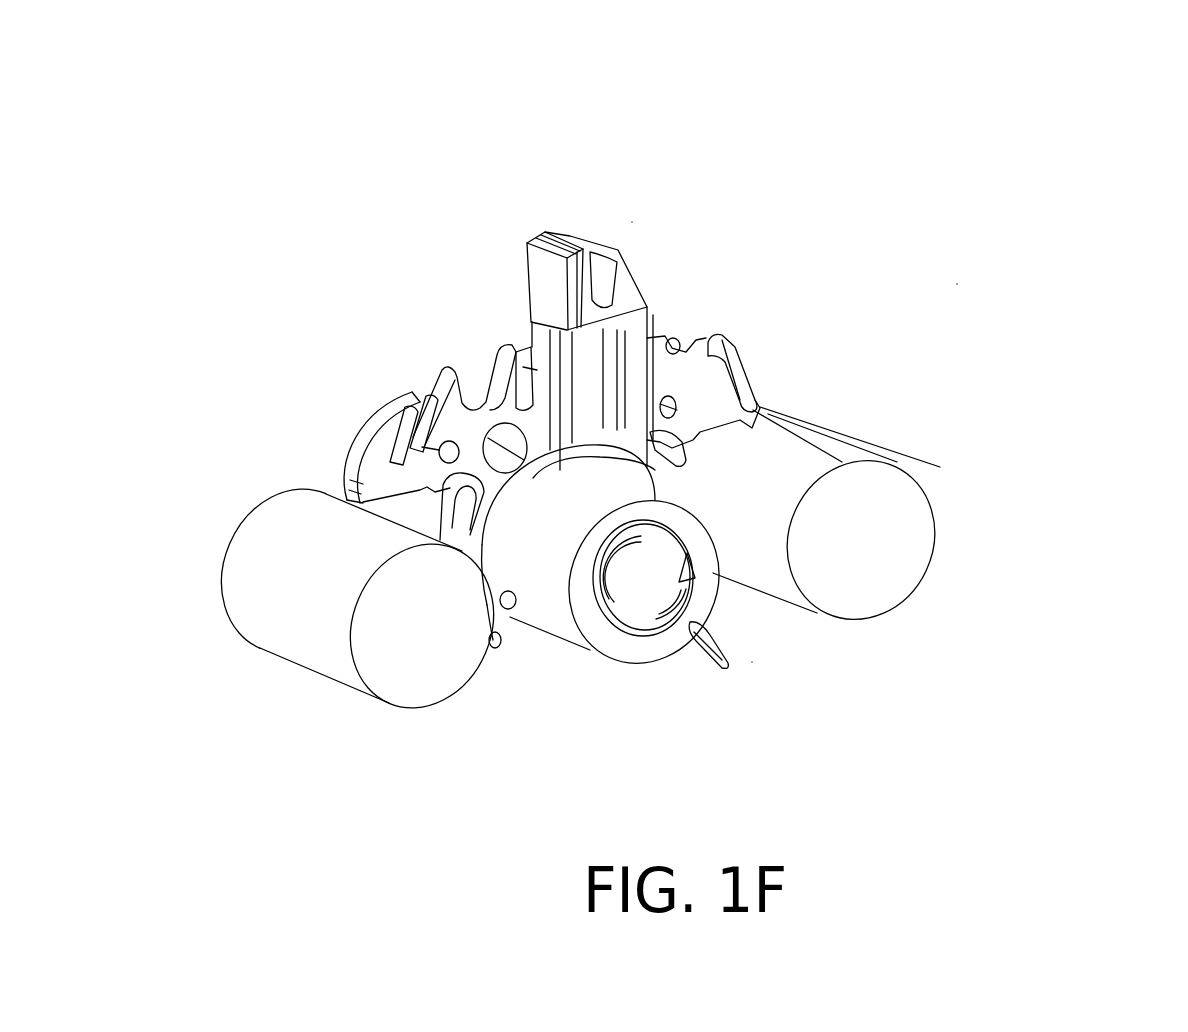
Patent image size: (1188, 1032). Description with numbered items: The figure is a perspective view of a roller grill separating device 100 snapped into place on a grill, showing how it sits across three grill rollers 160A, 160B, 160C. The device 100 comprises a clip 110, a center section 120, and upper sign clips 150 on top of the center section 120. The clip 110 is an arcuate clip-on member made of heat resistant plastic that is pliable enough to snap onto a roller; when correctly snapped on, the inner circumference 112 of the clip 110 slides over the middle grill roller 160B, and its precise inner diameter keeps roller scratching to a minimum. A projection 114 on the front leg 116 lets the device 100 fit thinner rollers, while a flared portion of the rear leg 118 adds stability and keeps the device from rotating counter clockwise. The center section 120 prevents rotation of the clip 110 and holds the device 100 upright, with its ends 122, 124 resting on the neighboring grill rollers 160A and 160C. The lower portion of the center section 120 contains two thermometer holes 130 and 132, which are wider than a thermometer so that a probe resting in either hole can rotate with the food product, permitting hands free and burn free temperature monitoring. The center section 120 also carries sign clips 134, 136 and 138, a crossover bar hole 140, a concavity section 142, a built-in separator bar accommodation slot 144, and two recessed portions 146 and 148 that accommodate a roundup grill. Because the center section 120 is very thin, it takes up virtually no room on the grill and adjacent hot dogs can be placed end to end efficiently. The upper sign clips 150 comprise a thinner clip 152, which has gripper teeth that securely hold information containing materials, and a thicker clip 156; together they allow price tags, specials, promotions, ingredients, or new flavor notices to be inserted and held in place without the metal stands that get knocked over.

The roller grill separating device 100 is at (983, 269).
The clip 110 is at (779, 682).
The inner circumference 112 is at (519, 556).
The projection 114 is at (512, 618).
The front leg 116 is at (497, 612).
The rear leg 118 is at (713, 663).
The center section 120 is at (801, 376).
The end 122 is at (373, 487).
The end 124 is at (850, 463).
The thermometer hole 130 is at (407, 400).
The thermometer hole 132 is at (678, 405).
The sign clip 134 is at (400, 432).
The sign clip 136 is at (510, 345).
The sign clip 138 is at (708, 342).
The crossover bar hole 140 is at (502, 485).
The concavity section 142 is at (477, 393).
The built-in separator bar accommodation slot 144 is at (633, 347).
The recessed portion 146 is at (485, 490).
The recessed portion 148 is at (665, 457).
The upper sign clips 150 is at (657, 202).
The thinner clip 152 is at (545, 275).
The thicker clip 156 is at (620, 288).
The grill roller 160A is at (423, 662).
The grill roller 160B is at (631, 607).
The grill roller 160C is at (875, 543).